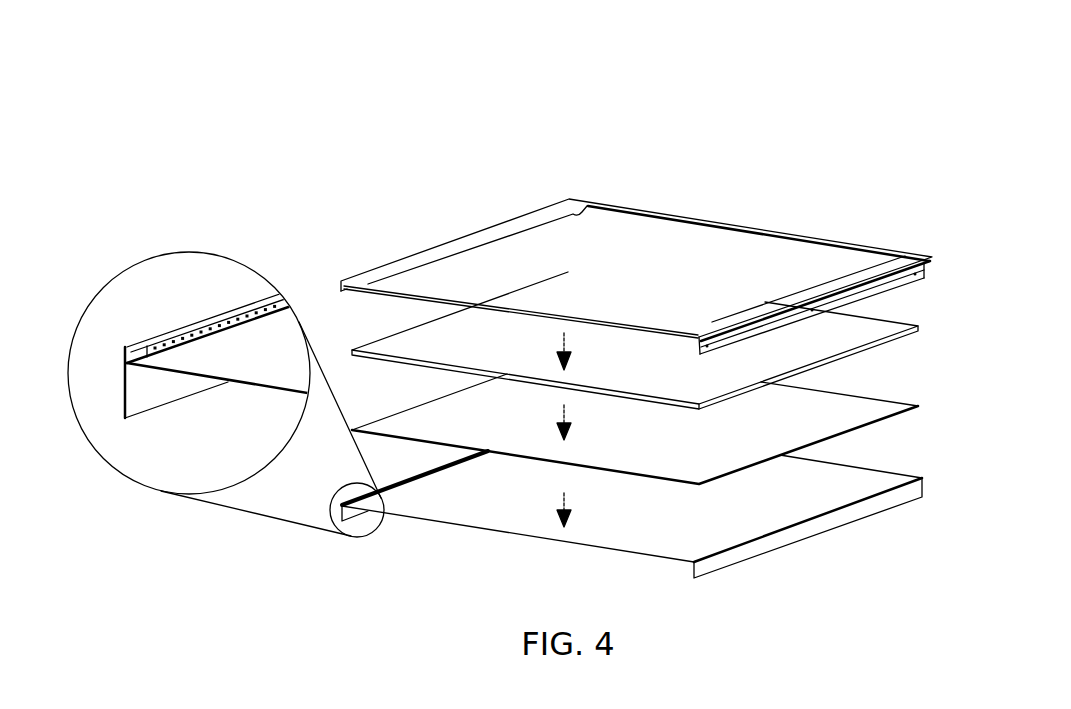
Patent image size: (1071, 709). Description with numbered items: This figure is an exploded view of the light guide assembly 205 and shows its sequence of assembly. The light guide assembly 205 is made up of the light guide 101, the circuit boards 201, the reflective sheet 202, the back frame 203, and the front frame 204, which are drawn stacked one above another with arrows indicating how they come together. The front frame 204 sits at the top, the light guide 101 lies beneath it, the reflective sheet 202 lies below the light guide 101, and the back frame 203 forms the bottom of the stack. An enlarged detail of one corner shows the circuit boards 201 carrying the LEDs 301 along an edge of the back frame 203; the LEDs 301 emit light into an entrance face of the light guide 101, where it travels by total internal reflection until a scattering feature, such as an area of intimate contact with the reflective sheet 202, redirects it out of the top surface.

The light guide assembly 205 is at (527, 349).
The front frame 204 is at (664, 276).
The light guide 101 is at (664, 340).
The reflective sheet 202 is at (657, 413).
The back frame 203 is at (544, 462).
The circuit boards 201 is at (287, 361).
The LEDs 301 is at (215, 284).